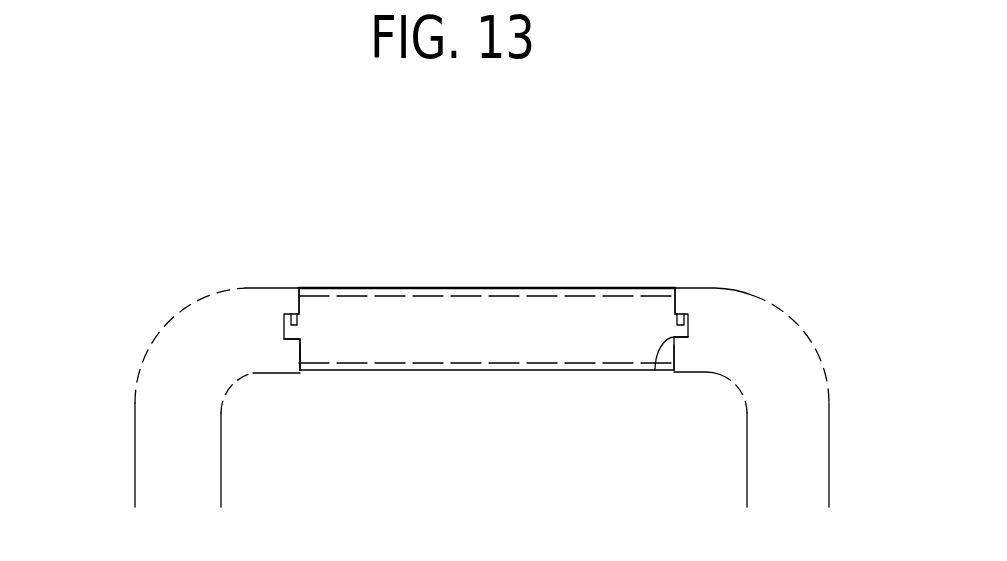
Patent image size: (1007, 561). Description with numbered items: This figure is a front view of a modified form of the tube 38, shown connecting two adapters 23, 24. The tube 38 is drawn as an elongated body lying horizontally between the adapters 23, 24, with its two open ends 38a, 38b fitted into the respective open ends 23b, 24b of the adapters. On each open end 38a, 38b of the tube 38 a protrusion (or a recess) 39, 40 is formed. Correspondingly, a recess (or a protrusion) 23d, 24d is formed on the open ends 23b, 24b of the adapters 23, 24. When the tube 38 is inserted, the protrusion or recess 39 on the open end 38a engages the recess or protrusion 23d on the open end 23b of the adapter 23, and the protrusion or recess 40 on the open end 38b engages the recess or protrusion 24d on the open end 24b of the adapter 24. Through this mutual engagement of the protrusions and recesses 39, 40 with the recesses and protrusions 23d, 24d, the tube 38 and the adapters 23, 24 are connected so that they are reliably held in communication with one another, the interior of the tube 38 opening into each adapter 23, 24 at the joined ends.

The adapter 23 is at (160, 338).
The adapter 24 is at (820, 358).
The open end of adapter 23b is at (270, 317).
The open end of adapter 24b is at (703, 317).
The recess (or protrusion) 23d is at (296, 343).
The recess (or protrusion) 24d is at (654, 372).
The tube 38 is at (505, 190).
The open end of tube 38a is at (317, 317).
The open end of tube 38b is at (662, 317).
The protrusion (or recess) 39 is at (295, 318).
The protrusion (or recess) 40 is at (683, 317).